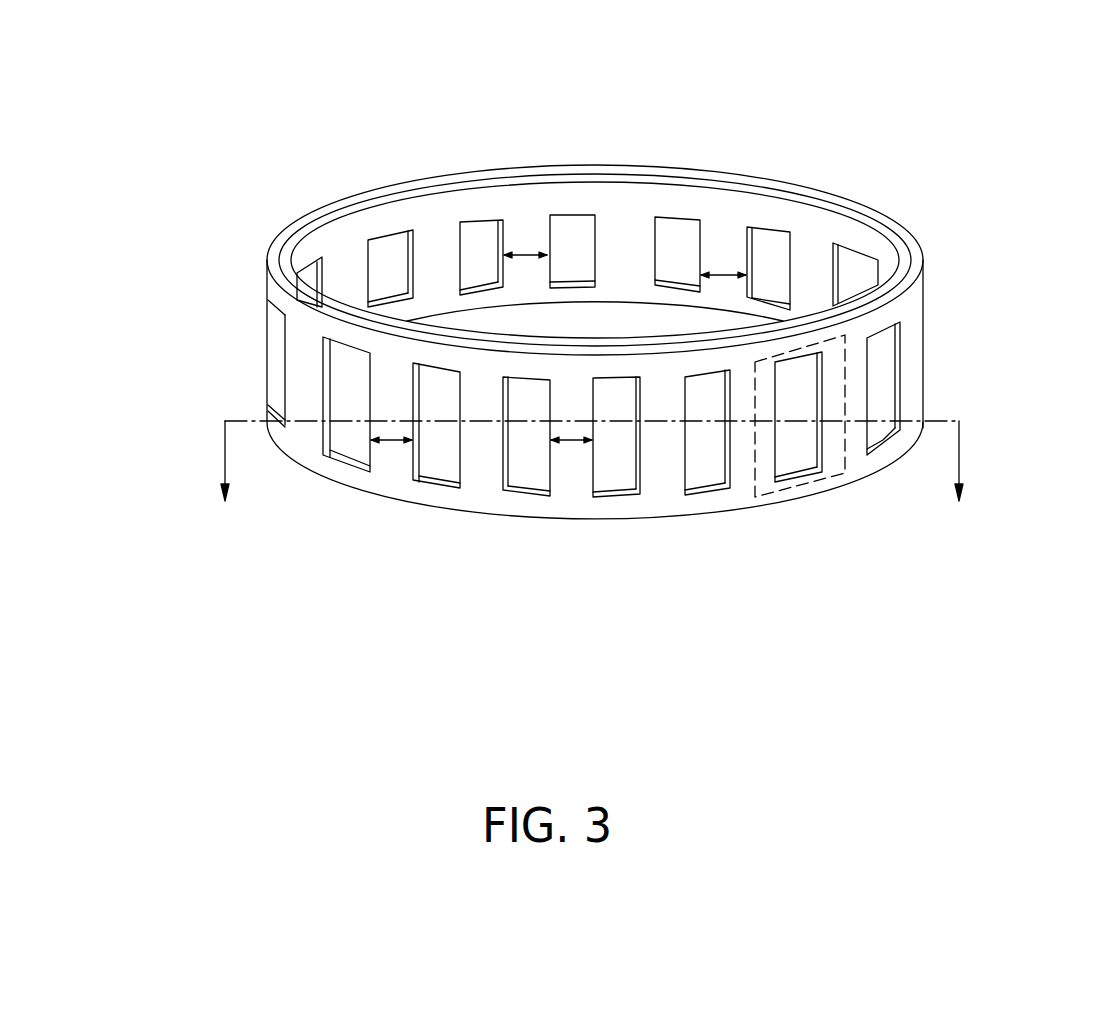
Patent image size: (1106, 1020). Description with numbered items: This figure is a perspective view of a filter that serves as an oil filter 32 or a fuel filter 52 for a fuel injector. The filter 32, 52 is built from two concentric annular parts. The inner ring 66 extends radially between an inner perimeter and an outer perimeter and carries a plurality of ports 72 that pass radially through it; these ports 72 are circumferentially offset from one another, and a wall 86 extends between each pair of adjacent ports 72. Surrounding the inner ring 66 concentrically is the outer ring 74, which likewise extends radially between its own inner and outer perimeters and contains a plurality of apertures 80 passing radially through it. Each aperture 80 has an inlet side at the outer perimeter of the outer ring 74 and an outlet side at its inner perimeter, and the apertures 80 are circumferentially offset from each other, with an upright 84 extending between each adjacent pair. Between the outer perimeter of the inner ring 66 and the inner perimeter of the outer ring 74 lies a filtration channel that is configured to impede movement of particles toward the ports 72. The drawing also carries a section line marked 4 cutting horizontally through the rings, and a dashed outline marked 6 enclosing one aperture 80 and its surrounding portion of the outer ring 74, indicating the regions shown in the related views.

The oil filter 32 is at (686, 257).
The fuel filter 52 is at (962, 133).
The inner ring 66 is at (630, 190).
The ports 72 is at (478, 230).
The outer ring 74 is at (655, 508).
The apertures 80 is at (442, 468).
The upright 84 is at (393, 441).
The wall 86 is at (528, 255).
The section line 4- 4 is at (593, 474).
The detail region 6 is at (830, 481).